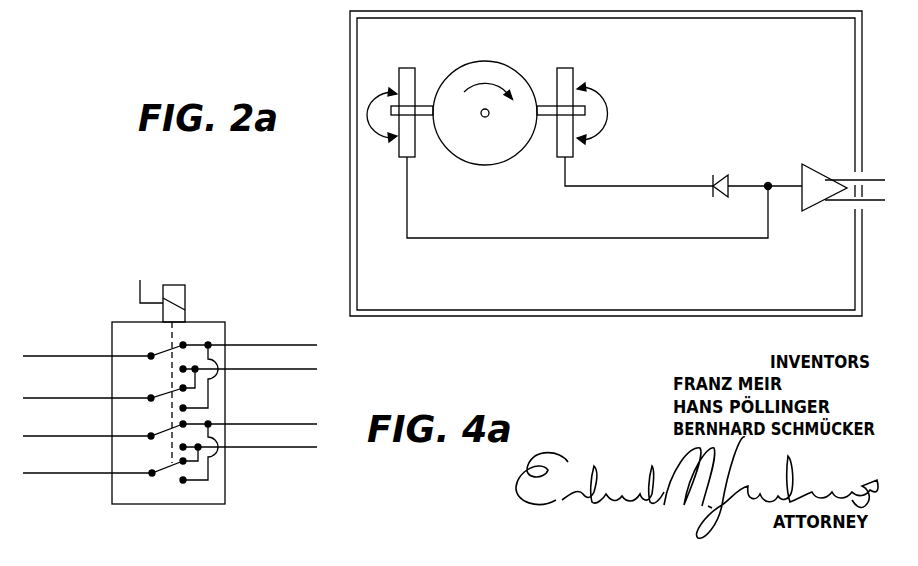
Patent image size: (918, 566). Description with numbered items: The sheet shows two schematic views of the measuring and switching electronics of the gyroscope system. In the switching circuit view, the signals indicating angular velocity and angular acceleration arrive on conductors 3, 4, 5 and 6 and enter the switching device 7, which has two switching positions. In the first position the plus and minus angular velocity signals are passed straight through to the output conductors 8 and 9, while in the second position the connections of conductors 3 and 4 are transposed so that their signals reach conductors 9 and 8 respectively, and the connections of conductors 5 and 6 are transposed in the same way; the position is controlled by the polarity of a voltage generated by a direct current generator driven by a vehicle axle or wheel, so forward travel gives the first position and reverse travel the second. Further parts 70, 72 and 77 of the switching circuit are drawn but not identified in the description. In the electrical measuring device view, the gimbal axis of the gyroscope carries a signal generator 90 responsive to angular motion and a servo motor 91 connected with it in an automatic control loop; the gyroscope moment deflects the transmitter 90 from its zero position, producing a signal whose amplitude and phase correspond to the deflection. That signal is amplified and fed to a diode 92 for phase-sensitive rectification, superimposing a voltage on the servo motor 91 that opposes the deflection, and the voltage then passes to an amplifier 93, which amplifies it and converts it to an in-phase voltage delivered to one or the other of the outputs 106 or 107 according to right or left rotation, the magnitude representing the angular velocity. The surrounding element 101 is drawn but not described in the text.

In FIG. 2A, the conductor 3 is at (67, 356).
In FIG. 4A, the conductor 3 is at (488, 153).
In FIG. 2A, the conductor 4 is at (50, 398).
In FIG. 2A, the conductor 5 is at (68, 436).
In FIG. 2A, the conductor 6 is at (60, 473).
In FIG. 2A, the switching device 7 is at (195, 322).
In FIG. 2A, the conductor 8 is at (255, 345).
In FIG. 2A, the conductor 9 is at (293, 370).
In FIG. 2A, the output line 70 is at (277, 424).
In FIG. 2A, the relay coil 72 is at (140, 280).
In FIG. 2A, the output line 77 is at (277, 447).
In FIG. 4A, the signal generator 90 is at (570, 70).
In FIG. 4A, the servo motor 91 is at (407, 68).
In FIG. 4A, the diode 92 is at (716, 175).
In FIG. 4A, the amplifier 93 is at (807, 164).
In FIG. 4A, the housing 101 is at (503, 317).
In FIG. 4A, the output 106 is at (873, 180).
In FIG. 4A, the output 107 is at (880, 202).